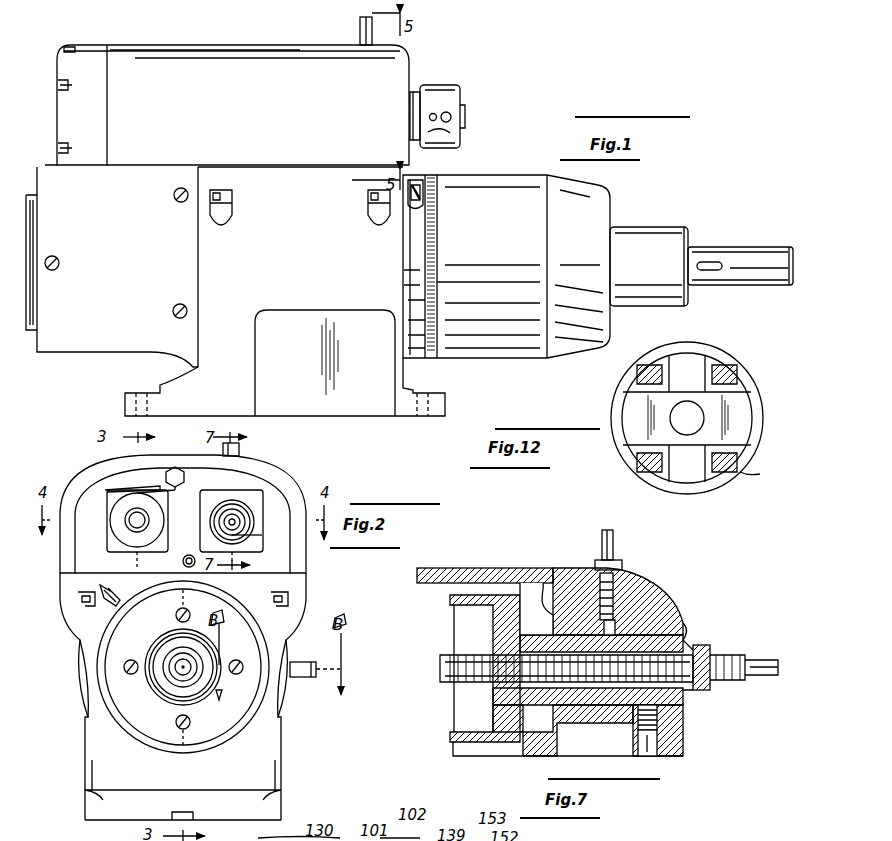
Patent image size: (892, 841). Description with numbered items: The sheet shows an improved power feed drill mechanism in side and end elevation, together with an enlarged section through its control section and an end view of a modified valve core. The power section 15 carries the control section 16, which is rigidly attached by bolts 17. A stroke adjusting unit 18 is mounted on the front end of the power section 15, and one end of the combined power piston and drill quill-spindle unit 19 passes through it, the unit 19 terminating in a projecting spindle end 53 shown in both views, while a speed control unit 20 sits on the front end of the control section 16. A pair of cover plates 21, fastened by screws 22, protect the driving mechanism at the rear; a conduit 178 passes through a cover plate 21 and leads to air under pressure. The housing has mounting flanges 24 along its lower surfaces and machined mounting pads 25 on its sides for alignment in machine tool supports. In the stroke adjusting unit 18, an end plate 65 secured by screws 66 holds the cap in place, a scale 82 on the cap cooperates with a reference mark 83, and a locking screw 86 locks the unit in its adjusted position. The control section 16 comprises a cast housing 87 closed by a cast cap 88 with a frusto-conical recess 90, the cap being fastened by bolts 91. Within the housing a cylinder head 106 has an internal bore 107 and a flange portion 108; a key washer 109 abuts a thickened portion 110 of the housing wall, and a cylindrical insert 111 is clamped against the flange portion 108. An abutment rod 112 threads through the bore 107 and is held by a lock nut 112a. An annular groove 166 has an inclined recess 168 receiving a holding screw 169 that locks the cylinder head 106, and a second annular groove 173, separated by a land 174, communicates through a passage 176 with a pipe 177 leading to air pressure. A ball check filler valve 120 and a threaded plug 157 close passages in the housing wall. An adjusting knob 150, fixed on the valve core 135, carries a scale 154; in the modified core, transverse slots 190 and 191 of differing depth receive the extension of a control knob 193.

In FIG. 1, the power section 15 is at (302, 249).
In FIG. 2, the power section 15 is at (76, 645).
In FIG. 1, the control section 16 is at (262, 118).
In FIG. 2, the control section 16 is at (308, 492).
In FIG. 1, the bolts 17 is at (232, 193).
In FIG. 2, the bolts 17 is at (78, 598).
In FIG. 1, the stroke adjusting unit 18 is at (497, 236).
In FIG. 2, the stroke adjusting unit 18 is at (245, 745).
In FIG. 1, the combined power piston and drill quill-spindle unit 19 is at (648, 230).
In FIG. 2, the combined power piston and drill quill-spindle unit 19 is at (158, 636).
In FIG. 1, the speed control unit 20 is at (461, 95).
In FIG. 2, the speed control unit 20 is at (140, 491).
In FIG. 1, the cover plates 21 is at (105, 348).
In FIG. 1, the screws 22 is at (180, 201).
In FIG. 1, the mounting flanges 24 is at (126, 403).
In FIG. 2, the mounting flanges 24 is at (103, 805).
In FIG. 1, the mounting pads 25 is at (383, 416).
In FIG. 2, the mounting pads 25 is at (85, 722).
In FIG. 1, the drive shaft 53 is at (728, 266).
In FIG. 2, the drive shaft 53 is at (170, 678).
In FIG. 2, the end plate 65 is at (145, 718).
In FIG. 2, the screws 66 is at (183, 730).
In FIG. 1, the scale 82 is at (430, 285).
In FIG. 1, the reference mark 83 is at (404, 272).
In FIG. 1, the locking screw 86 is at (425, 178).
In FIG. 2, the locking screw 86 is at (120, 592).
In FIG. 1, the cast housing 87 is at (212, 45).
In FIG. 1, the cast cap 88 is at (95, 46).
In FIG. 7, the frusto-conical recess 90 is at (493, 568).
In FIG. 1, the bolts 91 is at (56, 85).
In FIG. 7, the cylinder head 106 is at (715, 692).
In FIG. 7, the internal bore 107 is at (500, 690).
In FIG. 7, the flange portion 108 is at (493, 622).
In FIG. 7, the key washer 109 is at (543, 588).
In FIG. 7, the thickened portion 110 is at (553, 583).
In FIG. 7, the cylindrical insert 111 is at (450, 568).
In FIG. 2, the abutment rod 112 is at (262, 535).
In FIG. 7, the abutment rod 112 is at (440, 665).
In FIG. 7, the lock nut 112a is at (705, 645).
In FIG. 2, the ball check filler valve 120 is at (231, 516).
In FIG. 2, the valve core 135 is at (135, 527).
In FIG. 1, the adjusting knob 150 is at (462, 100).
In FIG. 2, the adjusting knob 150 is at (107, 543).
In FIG. 1, the scale 154 is at (452, 133).
In FIG. 2, the scale 154 is at (107, 490).
In FIG. 2, the threaded plug 157 is at (188, 556).
In FIG. 7, the annular groove 166 is at (690, 638).
In FIG. 7, the inclined recess 168 is at (683, 700).
In FIG. 7, the holding screw 169 is at (683, 725).
In FIG. 7, the second annular groove 173 is at (578, 730).
In FIG. 7, the land 174 is at (625, 635).
In FIG. 7, the passage 176 is at (620, 600).
In FIG. 1, the pipe 177 is at (358, 25).
In FIG. 2, the pipe 177 is at (241, 448).
In FIG. 7, the pipe 177 is at (615, 535).
In FIG. 2, the conduit 178 is at (302, 680).
In FIG. 12, the transverse slot 190 is at (738, 398).
In FIG. 12, the transverse slot 191 is at (688, 360).
In FIG. 12, the control knob 193 is at (765, 473).